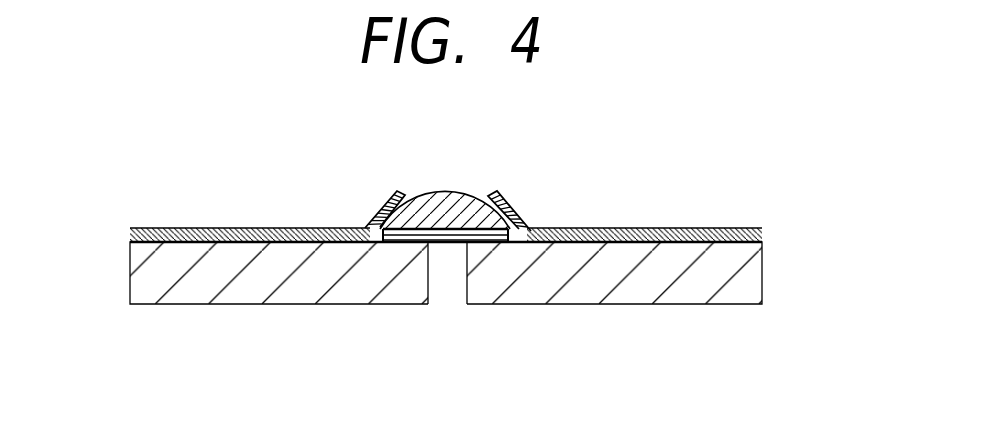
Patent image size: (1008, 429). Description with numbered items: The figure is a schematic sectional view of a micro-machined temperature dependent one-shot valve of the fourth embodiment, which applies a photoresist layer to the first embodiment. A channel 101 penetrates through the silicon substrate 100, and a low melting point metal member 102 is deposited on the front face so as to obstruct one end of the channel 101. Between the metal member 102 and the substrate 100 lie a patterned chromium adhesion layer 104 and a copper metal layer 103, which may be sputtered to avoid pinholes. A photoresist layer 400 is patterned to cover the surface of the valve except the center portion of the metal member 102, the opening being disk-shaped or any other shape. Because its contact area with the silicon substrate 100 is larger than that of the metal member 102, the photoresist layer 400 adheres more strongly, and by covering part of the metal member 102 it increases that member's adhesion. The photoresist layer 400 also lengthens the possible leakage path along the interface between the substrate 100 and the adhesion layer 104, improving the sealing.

The silicon substrate 100 is at (750, 276).
The channel 101 is at (448, 293).
The low melting point metal member 102 is at (450, 198).
The metal layer 103 is at (370, 227).
The adhesion layer 104 is at (378, 232).
The photoresist layer 400 is at (637, 229).